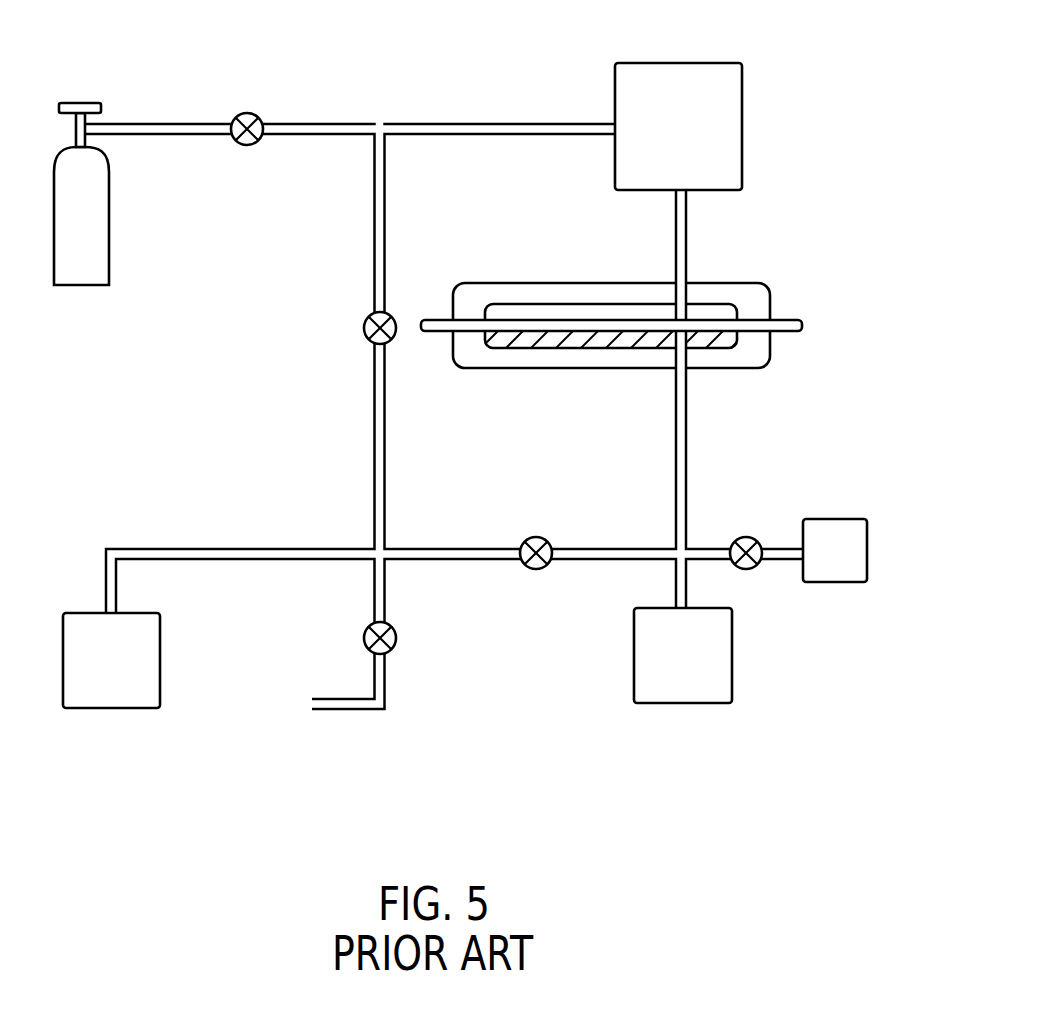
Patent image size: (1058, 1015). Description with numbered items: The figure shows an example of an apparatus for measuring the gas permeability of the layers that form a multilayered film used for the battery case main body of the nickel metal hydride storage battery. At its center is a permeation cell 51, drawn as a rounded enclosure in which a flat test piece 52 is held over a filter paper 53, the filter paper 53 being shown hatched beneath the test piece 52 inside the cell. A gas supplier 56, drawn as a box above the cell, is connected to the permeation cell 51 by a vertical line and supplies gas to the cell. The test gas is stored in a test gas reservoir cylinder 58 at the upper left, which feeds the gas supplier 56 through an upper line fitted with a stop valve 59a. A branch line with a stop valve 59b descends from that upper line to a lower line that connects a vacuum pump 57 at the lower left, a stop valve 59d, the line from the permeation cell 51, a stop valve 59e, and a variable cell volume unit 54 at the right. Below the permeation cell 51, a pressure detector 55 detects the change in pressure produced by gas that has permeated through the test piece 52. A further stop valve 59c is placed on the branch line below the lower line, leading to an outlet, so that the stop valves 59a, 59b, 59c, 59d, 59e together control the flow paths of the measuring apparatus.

The permeation cell 51 is at (762, 292).
The test piece 52 is at (800, 318).
The filter paper 53 is at (722, 343).
The variable cell volume unit 54 is at (868, 558).
The pressure detector 55 is at (733, 671).
The gas supplier 56 is at (742, 109).
The vacuum pump 57 is at (161, 677).
The test gas reservoir cylinder 58 is at (110, 257).
The stop valve 59a is at (250, 112).
The stop valve 59b is at (363, 328).
The stop valve 59c is at (397, 641).
The stop valve 59d is at (537, 537).
The stop valve 59e is at (750, 537).